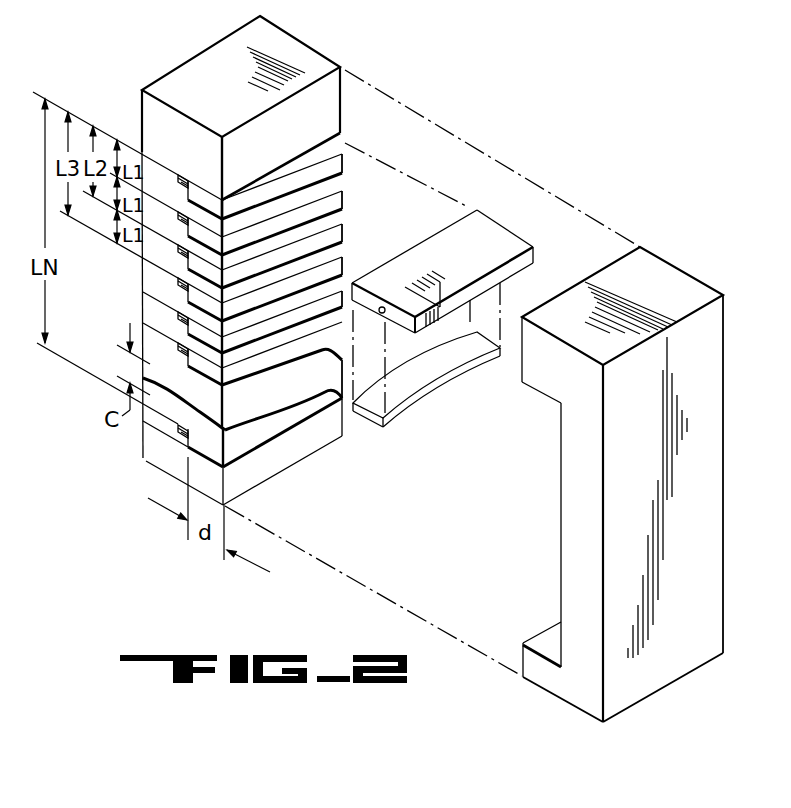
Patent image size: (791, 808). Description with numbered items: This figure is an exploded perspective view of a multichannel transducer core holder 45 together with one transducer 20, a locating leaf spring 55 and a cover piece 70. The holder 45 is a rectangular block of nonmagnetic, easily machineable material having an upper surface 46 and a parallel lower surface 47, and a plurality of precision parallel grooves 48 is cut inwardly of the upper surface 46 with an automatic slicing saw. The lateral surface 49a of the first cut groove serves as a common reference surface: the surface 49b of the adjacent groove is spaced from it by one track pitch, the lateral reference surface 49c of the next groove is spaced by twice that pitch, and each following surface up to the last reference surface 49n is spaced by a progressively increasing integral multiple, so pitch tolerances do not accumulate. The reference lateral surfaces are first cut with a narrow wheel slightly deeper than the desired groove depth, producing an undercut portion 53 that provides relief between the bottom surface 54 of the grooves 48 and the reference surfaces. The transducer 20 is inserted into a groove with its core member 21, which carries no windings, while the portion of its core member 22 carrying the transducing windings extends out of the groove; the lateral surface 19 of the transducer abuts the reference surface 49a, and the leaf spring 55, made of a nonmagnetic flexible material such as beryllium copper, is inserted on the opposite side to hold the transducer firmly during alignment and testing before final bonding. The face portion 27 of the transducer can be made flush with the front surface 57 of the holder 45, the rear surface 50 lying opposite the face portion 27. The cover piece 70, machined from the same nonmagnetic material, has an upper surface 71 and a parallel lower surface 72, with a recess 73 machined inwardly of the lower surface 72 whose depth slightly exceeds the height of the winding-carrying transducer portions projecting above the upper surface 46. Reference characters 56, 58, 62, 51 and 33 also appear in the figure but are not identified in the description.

The transducer core holder 45 is at (232, 46).
The upper surface 46 is at (343, 74).
The lower surface 47 is at (142, 98).
The grooves 48 is at (342, 278).
The lateral surface of first groove 49a is at (342, 137).
The lateral surface of second groove 49b is at (286, 200).
The lateral reference surface of next groove 49c is at (315, 215).
The lateral reference surface of last groove 49n is at (242, 445).
The undercut portion 53 is at (185, 178).
The bottom surface 54 is at (185, 296).
The front face of lamination 56 is at (250, 197).
The front surface 57 is at (145, 455).
The assembly 58 is at (546, 141).
The direction arrow 62 is at (122, 497).
The rear surface 50 is at (464, 279).
The top face edge of slide bar 51 is at (430, 232).
The lateral surface 19 is at (510, 236).
The transducer 20 is at (530, 252).
The core member 21 is at (442, 271).
The core member 22 is at (504, 265).
The serrated notch 33 is at (420, 292).
The face portion 27 is at (402, 319).
The leaf spring 55 is at (432, 377).
The cover piece 70 is at (622, 481).
The upper surface 71 is at (713, 362).
The lower surface 72 is at (522, 663).
The recess 73 is at (561, 590).